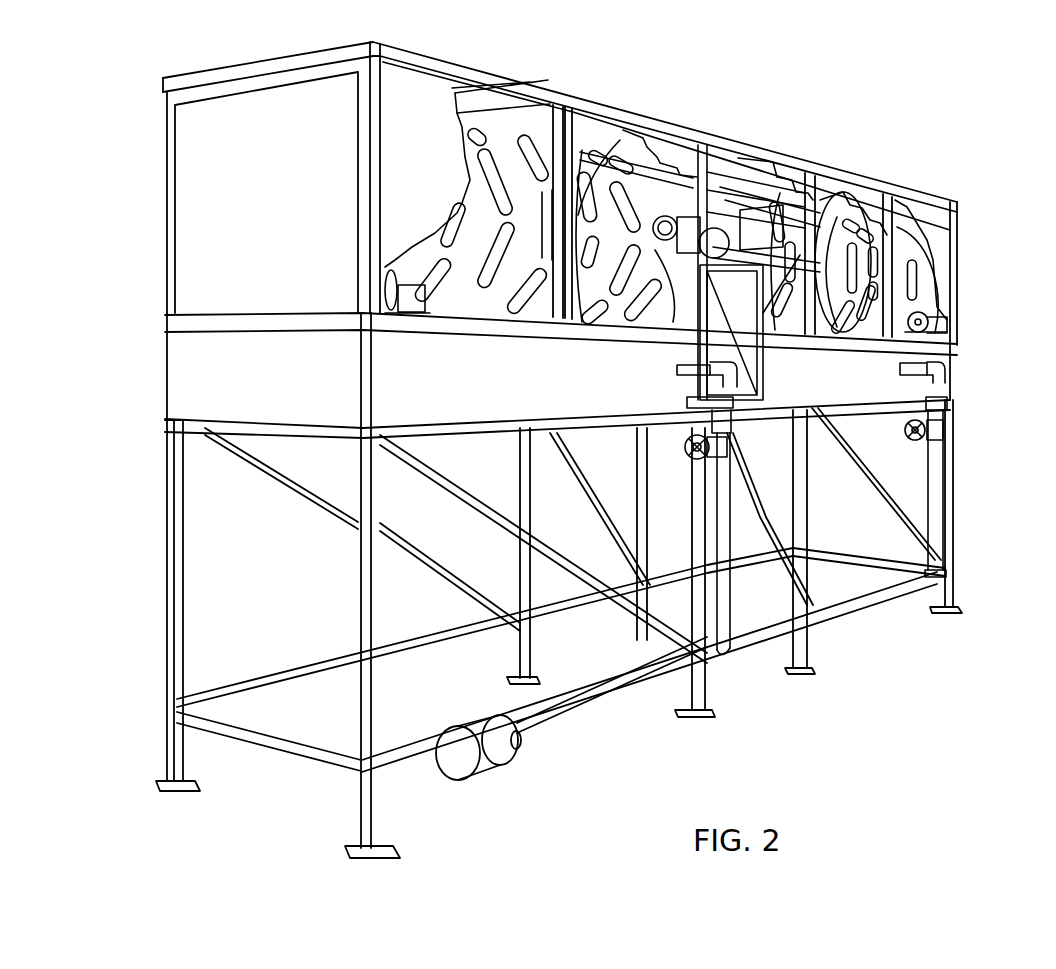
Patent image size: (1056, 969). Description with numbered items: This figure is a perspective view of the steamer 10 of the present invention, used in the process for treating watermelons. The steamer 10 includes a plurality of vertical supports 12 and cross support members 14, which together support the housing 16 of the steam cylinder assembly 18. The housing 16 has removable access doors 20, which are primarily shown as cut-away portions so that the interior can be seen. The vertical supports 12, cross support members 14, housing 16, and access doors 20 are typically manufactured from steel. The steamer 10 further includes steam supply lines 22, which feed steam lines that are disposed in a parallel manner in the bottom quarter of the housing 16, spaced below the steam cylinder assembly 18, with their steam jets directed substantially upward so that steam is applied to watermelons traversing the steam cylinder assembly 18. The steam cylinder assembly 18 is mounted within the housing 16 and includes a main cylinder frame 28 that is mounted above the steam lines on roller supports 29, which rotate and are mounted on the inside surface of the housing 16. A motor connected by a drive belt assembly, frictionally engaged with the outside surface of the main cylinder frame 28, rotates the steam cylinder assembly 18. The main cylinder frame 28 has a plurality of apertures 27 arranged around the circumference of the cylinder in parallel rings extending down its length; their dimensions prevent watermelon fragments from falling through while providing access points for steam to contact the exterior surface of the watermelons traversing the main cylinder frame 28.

The steamer 10 is at (878, 108).
The vertical supports 12 is at (178, 642).
The cross support members 14 is at (490, 485).
The housing 16 is at (271, 189).
The steam cylinder assembly 18 is at (517, 163).
The removable access doors 20 is at (446, 176).
The steam supply lines 22 is at (950, 478).
The apertures 27 is at (592, 198).
The main cylinder frame 28 is at (703, 150).
The roller supports 29 is at (937, 303).